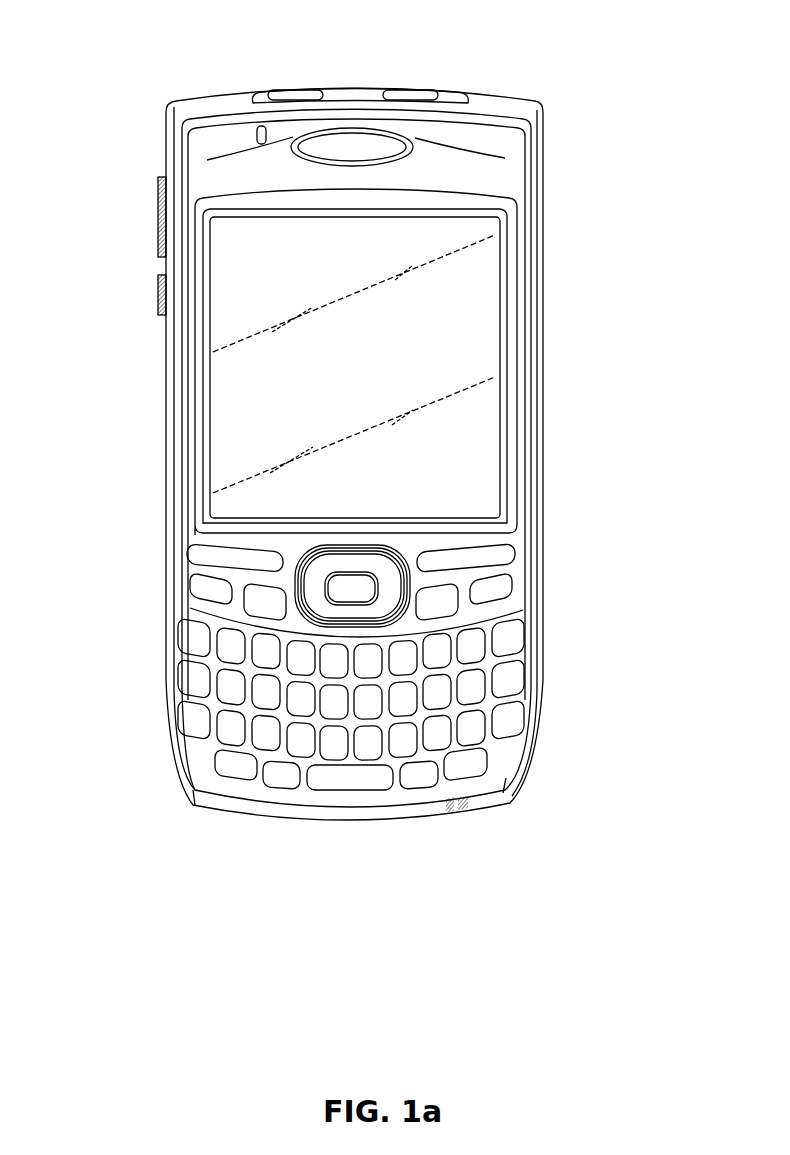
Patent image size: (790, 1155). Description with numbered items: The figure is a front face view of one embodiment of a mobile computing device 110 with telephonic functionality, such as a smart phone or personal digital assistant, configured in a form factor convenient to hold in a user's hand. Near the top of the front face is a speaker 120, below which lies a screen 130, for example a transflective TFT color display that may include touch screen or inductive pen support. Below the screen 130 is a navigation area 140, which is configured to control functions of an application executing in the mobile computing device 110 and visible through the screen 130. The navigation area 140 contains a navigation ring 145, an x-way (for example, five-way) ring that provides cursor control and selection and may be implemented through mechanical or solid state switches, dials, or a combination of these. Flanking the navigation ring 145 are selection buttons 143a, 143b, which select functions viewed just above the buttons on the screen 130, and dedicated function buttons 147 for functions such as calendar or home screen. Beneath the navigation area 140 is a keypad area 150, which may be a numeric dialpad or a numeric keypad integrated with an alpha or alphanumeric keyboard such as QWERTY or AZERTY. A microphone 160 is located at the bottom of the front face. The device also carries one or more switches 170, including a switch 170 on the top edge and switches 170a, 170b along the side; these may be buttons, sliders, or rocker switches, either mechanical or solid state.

The mobile computing device 110 is at (538, 116).
The speaker 120 is at (352, 138).
The screen 130 is at (457, 327).
The navigation area 140 is at (547, 525).
The selection button 143a is at (218, 552).
The selection button 143b is at (480, 553).
The navigation ring 145 is at (378, 570).
The dedicated function buttons 147 is at (263, 606).
The keypad area 150 is at (547, 632).
The microphone 160 is at (457, 820).
The switch 170 is at (418, 87).
The switch 170a is at (155, 205).
The switch 170b is at (155, 295).